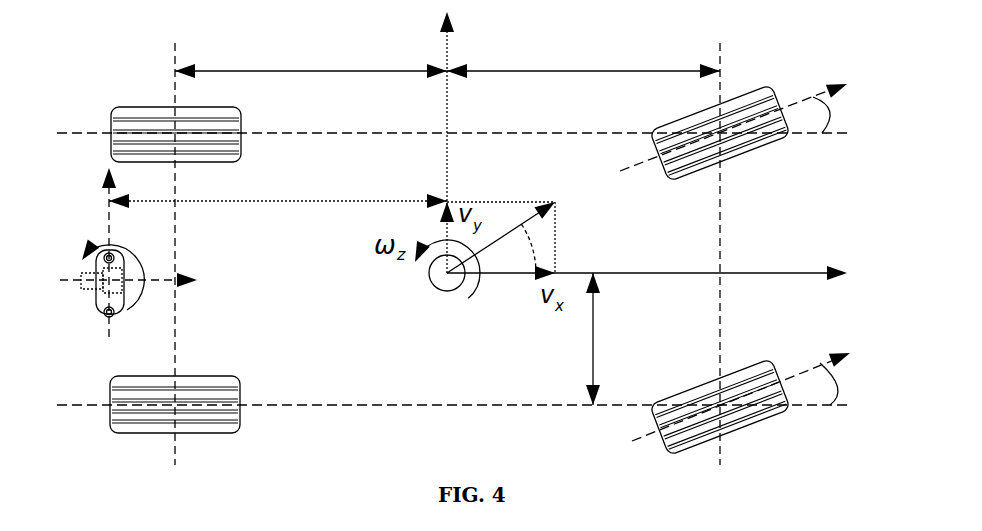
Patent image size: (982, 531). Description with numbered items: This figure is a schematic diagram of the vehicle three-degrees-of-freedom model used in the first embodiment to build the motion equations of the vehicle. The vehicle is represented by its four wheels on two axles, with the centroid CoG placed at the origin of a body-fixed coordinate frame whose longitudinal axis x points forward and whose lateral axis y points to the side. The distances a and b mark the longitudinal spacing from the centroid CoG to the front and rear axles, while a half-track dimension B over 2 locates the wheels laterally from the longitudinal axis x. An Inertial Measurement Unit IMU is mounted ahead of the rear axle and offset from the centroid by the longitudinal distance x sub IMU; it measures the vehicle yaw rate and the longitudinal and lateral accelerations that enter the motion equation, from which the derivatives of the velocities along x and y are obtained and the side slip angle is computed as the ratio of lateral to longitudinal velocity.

The half track width B/2 dimension 2 is at (637, 335).
The distance from CoG to front axle a is at (583, 84).
The distance from CoG to rear axle b is at (311, 84).
The longitudinal vehicle axis x is at (647, 260).
The lateral vehicle axis y is at (467, 142).
The center of gravity CoG is at (425, 292).
The Inertial Measurement Unit IMU is at (242, 252).